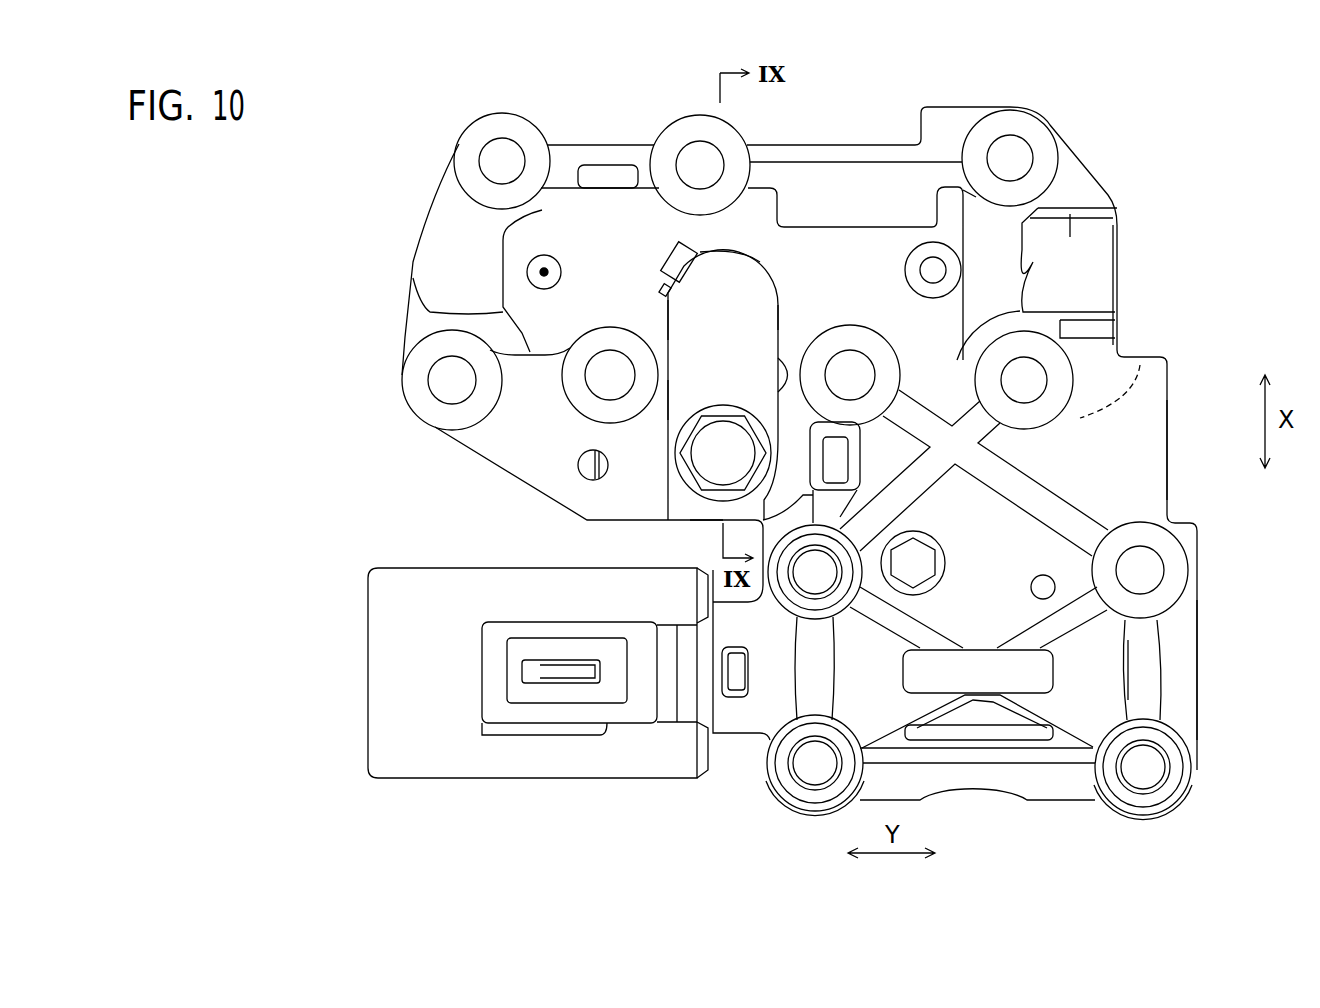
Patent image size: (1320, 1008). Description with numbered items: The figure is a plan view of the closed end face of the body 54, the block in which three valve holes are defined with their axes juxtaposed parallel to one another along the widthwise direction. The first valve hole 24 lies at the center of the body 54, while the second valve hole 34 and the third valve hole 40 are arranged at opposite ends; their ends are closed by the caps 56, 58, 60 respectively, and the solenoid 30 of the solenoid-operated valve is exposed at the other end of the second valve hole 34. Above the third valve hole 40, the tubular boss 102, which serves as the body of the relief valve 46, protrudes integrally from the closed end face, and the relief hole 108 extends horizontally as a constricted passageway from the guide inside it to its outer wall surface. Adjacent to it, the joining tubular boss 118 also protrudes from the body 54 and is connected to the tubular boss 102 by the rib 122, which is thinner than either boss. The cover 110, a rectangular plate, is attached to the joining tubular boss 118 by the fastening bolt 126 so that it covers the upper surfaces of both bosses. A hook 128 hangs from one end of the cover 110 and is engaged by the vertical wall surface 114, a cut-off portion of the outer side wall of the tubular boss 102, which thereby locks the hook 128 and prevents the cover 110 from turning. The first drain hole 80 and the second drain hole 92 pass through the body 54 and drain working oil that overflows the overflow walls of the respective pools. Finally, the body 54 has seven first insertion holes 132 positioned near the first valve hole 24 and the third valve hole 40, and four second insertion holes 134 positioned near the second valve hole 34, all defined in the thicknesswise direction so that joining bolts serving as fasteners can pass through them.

The body 54 is at (323, 216).
The first insertion holes 132 is at (690, 158).
The second insertion holes 134 is at (1135, 565).
The third valve hole 40 is at (1077, 207).
The cap 60 is at (1120, 268).
The tubular boss 102 is at (742, 255).
The relief valve 46 is at (770, 265).
The hook 128 is at (672, 258).
The vertical wall surface 114 is at (662, 290).
The cover 110 is at (760, 300).
The relief hole 108 is at (670, 320).
The first drain hole 80 is at (787, 372).
The first valve hole 24 is at (1142, 365).
The fastening bolt 126 is at (723, 440).
The cap 56 is at (1170, 447).
The rib 122 is at (667, 397).
The joining tubular boss 118 is at (684, 500).
The second drain hole 92 is at (1040, 588).
The second valve hole 34 is at (1135, 660).
The cap 58 is at (1197, 702).
The solenoid 30 is at (385, 660).